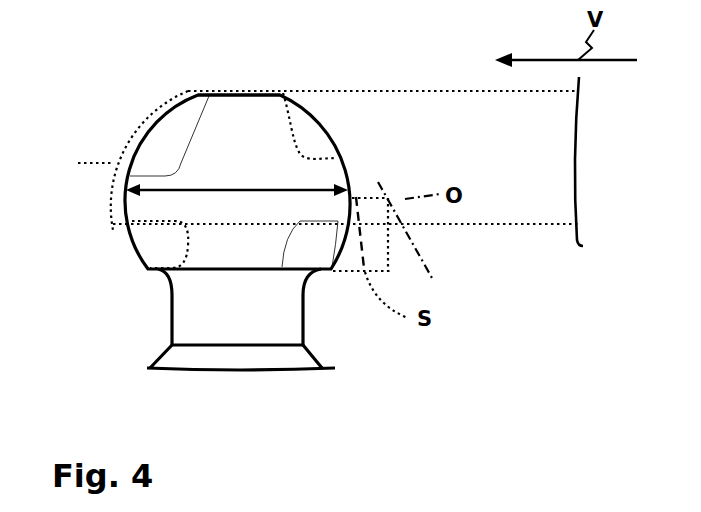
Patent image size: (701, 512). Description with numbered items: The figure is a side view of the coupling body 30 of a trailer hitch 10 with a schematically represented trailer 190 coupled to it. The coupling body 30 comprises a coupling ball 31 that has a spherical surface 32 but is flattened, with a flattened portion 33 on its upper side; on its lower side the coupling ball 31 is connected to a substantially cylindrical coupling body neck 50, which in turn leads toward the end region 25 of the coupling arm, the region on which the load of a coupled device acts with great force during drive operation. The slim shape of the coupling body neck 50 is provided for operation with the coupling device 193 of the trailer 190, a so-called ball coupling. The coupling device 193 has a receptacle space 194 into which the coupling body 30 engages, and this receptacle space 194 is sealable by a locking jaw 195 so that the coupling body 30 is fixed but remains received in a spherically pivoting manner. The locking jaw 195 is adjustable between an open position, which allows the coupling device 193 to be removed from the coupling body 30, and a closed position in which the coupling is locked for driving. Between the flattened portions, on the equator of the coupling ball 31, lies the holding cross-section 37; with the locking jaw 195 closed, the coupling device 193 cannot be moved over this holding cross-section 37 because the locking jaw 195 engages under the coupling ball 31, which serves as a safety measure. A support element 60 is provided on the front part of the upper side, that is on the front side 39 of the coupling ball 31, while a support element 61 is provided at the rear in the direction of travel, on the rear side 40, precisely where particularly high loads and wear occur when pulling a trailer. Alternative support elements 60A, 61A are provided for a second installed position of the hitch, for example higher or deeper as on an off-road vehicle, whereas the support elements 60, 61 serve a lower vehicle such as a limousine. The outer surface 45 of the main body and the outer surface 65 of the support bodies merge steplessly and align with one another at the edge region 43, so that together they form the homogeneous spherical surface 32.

The trailer hitch 10 is at (312, 314).
The end region 25 is at (195, 355).
The coupling body 30 is at (122, 233).
The coupling ball 31 is at (358, 186).
The spherical surface 32 is at (150, 250).
The flattened portion 33 is at (250, 95).
The holding cross-section 37 is at (250, 192).
The front side 39 is at (122, 199).
The rear side 40 is at (342, 158).
The edge region 43 is at (187, 147).
The outer surface 45 is at (123, 192).
The coupling body neck 50 is at (182, 323).
The support element 60 is at (167, 128).
The alternative support element 60A is at (318, 135).
The support element 61 is at (298, 256).
The alternative support element 61A is at (150, 272).
The outer surface 65 is at (185, 113).
The trailer 190 is at (448, 80).
The coupling device 193 is at (486, 230).
The receptacle space 194 is at (72, 163).
The locking jaw 195 is at (388, 262).